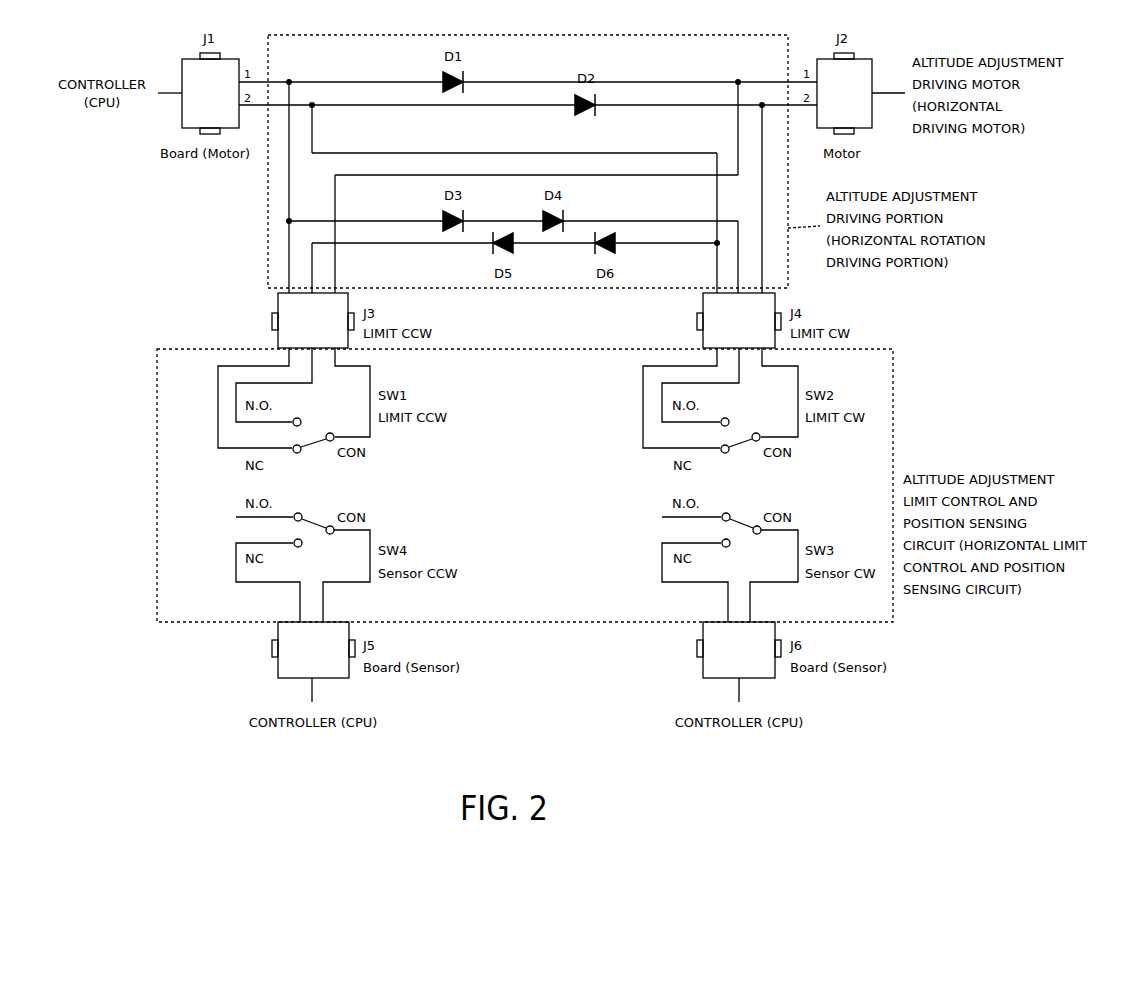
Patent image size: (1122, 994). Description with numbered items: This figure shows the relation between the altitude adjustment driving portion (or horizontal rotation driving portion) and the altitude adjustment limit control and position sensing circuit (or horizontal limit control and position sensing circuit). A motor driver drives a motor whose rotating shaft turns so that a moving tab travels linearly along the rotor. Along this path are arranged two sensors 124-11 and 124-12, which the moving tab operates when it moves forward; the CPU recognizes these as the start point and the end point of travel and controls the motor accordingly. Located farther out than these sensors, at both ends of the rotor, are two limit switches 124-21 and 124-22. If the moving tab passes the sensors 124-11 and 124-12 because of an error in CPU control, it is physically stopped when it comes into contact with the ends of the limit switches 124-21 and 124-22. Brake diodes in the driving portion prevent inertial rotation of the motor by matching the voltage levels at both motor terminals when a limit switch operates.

The limit switch 124-21 is at (278, 303).
The limit switch 124-22 is at (703, 303).
The sensor 124-11 is at (278, 667).
The sensor 124-12 is at (703, 667).